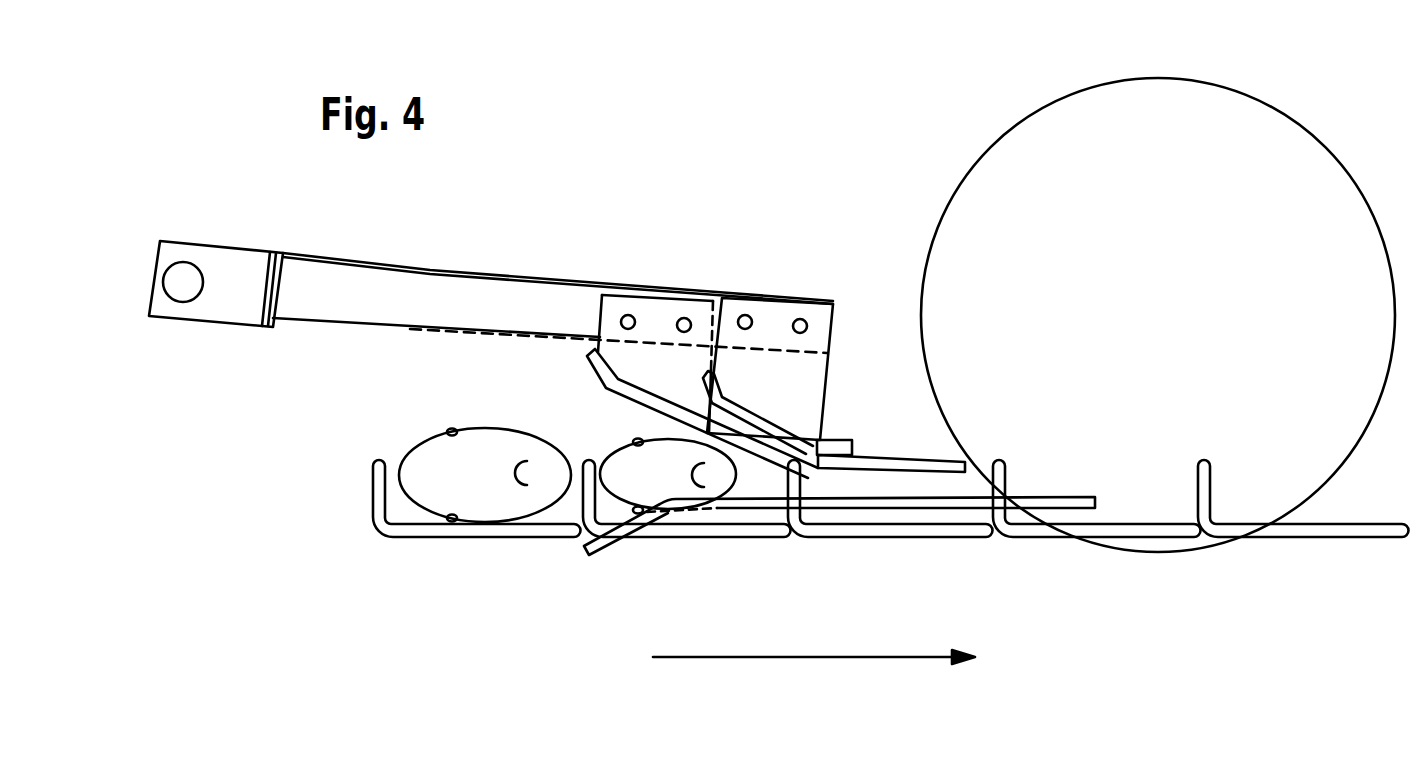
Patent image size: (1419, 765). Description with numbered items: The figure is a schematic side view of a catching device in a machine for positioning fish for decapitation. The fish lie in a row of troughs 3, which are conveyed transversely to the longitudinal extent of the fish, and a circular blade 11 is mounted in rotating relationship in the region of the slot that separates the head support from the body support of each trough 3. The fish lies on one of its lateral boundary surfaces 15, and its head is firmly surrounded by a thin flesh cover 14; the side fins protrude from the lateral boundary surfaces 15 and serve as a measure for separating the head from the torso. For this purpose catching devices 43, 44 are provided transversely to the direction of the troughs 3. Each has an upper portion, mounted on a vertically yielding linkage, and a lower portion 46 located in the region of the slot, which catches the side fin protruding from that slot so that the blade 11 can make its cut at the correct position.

The trough 3 is at (500, 528).
The blade 11 is at (1257, 98).
The flesh cover 14 is at (458, 429).
The lateral boundary surface 15 is at (462, 522).
The catching device 43 is at (648, 408).
The catching device 44 is at (767, 436).
The lower portion 46 is at (602, 547).